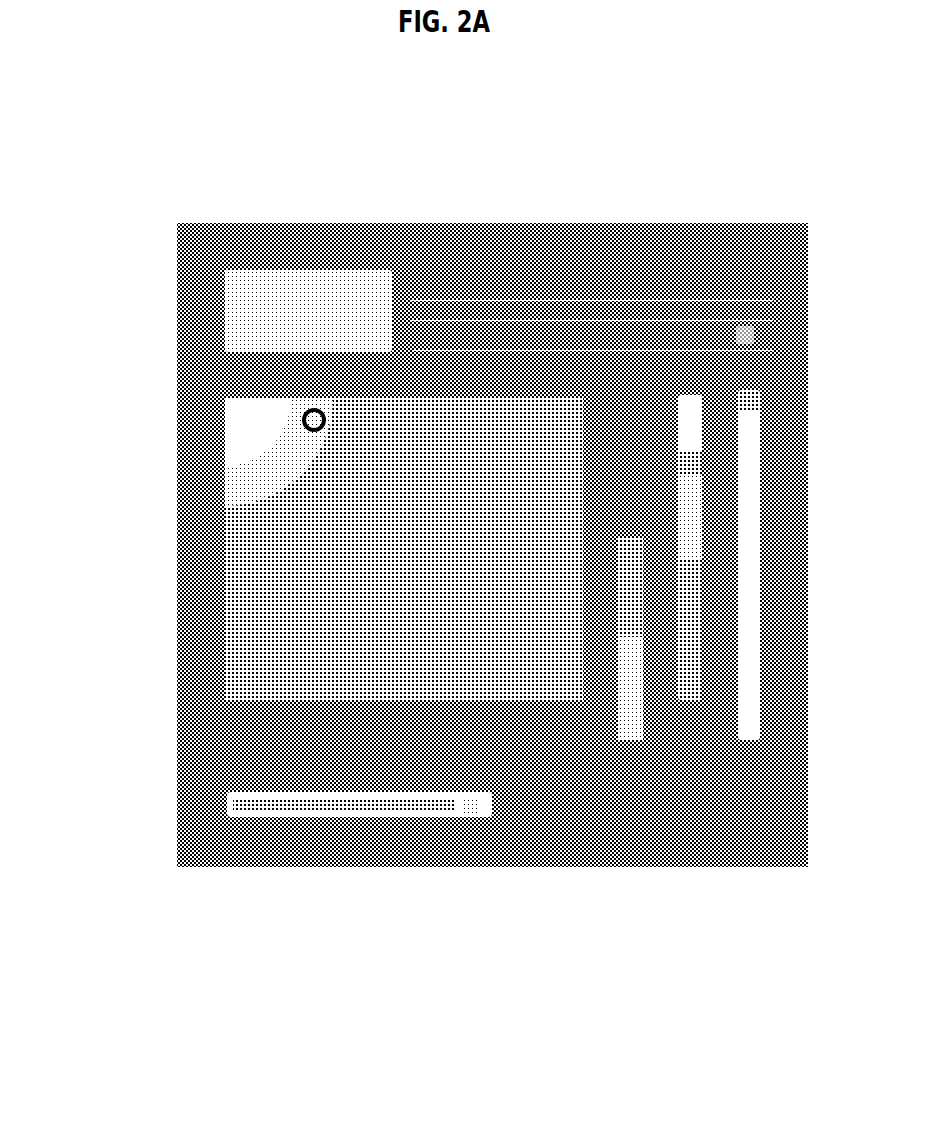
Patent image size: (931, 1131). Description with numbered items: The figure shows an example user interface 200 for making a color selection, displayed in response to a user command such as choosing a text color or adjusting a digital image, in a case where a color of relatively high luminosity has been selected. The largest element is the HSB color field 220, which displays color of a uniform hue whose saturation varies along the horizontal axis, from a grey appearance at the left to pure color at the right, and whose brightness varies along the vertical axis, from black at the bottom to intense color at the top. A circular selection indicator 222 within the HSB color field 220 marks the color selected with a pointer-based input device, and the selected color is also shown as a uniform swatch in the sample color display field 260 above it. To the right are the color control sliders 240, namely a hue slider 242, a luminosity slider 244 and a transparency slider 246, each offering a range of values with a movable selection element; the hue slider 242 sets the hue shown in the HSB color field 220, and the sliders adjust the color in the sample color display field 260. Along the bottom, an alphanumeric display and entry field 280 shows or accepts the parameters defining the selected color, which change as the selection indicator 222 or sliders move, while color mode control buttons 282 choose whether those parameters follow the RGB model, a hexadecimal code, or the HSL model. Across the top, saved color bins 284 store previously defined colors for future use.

The user interface 200 is at (379, 222).
The HSB color field 220 is at (227, 757).
The selection indicator 222 is at (314, 420).
The color control sliders 240 is at (703, 728).
The hue slider 242 is at (630, 720).
The luminosity slider 244 is at (691, 720).
The transparency slider 246 is at (799, 684).
The sample color display field 260 is at (241, 288).
The alphanumeric display and entry field 280 is at (227, 807).
The color mode control buttons 282 is at (518, 807).
The saved color bins 284 is at (773, 280).